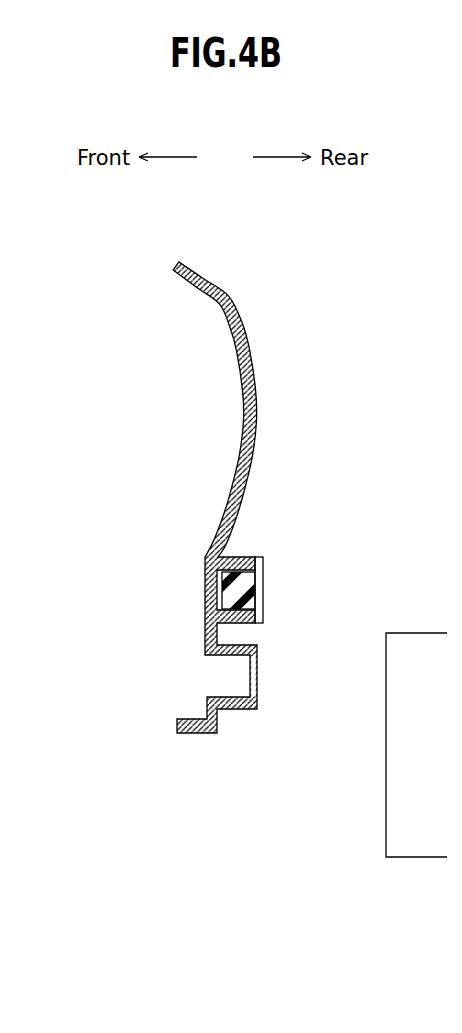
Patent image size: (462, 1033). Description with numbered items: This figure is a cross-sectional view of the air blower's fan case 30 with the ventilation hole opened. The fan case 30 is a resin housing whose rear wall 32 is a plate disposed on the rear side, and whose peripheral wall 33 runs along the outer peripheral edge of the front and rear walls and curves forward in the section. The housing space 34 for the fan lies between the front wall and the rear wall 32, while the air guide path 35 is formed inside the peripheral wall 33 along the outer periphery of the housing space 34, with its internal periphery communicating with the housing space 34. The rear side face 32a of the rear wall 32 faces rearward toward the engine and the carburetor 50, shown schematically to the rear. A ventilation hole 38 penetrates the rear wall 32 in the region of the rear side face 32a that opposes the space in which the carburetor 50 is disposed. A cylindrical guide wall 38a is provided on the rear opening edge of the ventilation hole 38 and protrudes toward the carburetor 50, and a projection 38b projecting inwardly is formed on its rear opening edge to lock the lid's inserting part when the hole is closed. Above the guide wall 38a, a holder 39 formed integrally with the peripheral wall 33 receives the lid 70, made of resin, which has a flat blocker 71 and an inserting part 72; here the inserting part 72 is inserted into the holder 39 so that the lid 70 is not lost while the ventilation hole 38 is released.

The fan case 30 is at (216, 274).
The peripheral wall 33 is at (238, 322).
The air guide path 35 is at (184, 431).
The housing space 34 is at (183, 604).
The rear wall 32 is at (206, 563).
The holder 39 is at (243, 556).
The blocker 71 is at (263, 560).
The lid 70 is at (275, 594).
The inserting part 72 is at (231, 594).
The ventilation hole 38 is at (215, 658).
The projection 38b is at (258, 689).
The guide wall 38a is at (230, 709).
The rear side face 32a is at (213, 735).
The carburetor 50 is at (415, 633).